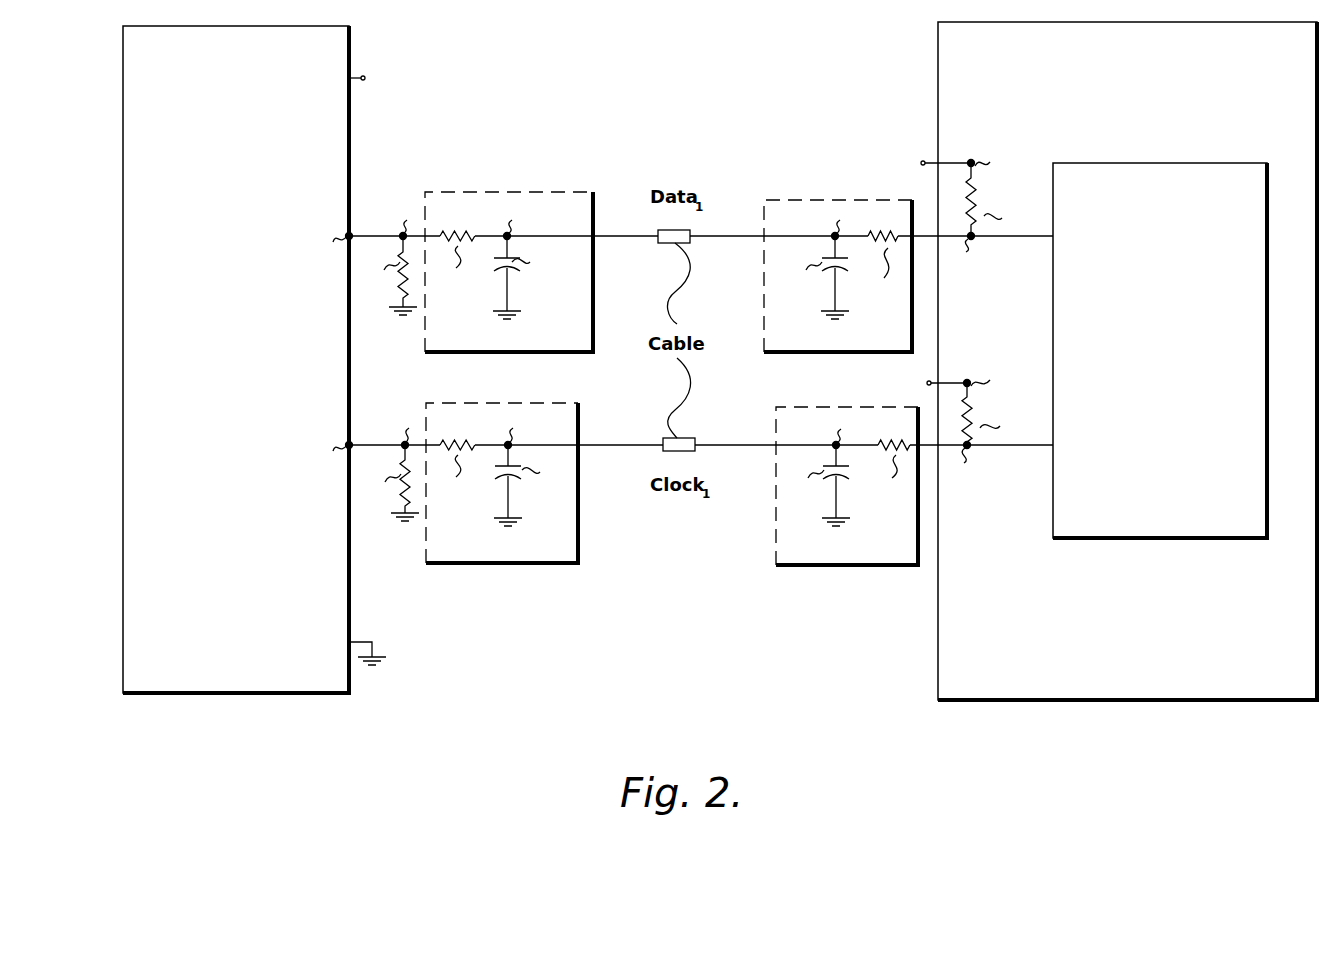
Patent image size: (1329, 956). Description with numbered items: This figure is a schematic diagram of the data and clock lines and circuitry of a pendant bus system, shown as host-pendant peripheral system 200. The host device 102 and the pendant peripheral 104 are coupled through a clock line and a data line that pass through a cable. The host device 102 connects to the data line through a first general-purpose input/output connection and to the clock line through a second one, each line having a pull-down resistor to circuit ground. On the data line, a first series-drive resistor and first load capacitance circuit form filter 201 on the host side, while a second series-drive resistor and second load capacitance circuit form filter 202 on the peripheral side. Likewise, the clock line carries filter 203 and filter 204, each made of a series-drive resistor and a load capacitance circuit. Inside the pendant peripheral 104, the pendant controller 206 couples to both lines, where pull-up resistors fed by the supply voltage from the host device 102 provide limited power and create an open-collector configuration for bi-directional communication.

The host-pendant peripheral system 200 is at (668, 58).
The host device 102 is at (222, 694).
The pendant peripheral 104 is at (1148, 701).
The filter 201 is at (500, 190).
The filter 202 is at (836, 198).
The filter 203 is at (480, 566).
The filter 204 is at (829, 568).
The pendant controller 206 is at (1141, 540).